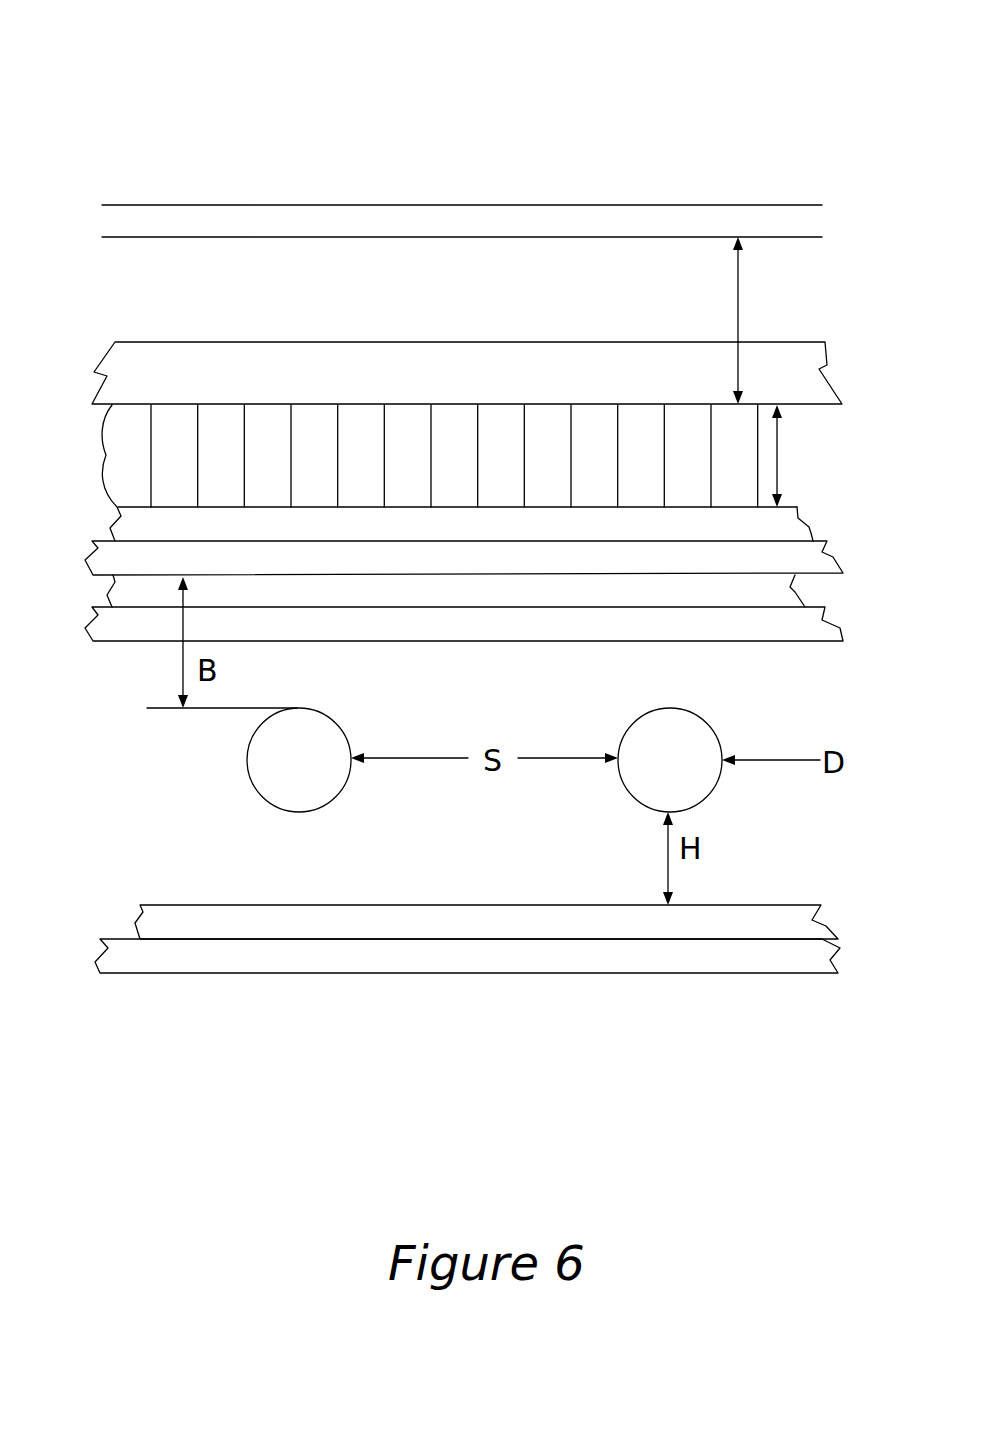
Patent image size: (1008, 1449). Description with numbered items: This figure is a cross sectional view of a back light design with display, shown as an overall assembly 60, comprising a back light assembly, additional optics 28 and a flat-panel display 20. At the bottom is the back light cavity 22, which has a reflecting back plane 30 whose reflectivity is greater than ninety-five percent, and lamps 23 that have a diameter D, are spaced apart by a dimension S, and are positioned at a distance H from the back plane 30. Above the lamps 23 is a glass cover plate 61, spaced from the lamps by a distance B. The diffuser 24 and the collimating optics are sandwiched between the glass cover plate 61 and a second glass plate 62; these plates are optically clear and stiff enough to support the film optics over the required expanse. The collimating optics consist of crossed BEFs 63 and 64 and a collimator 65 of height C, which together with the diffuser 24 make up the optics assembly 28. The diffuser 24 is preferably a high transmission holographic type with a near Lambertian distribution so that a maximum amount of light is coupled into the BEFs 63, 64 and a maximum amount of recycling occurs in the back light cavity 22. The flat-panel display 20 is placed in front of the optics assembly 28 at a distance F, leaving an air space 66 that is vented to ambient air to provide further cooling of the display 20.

The electronic assembly 60 is at (312, 78).
The flat-panel display 20 is at (510, 213).
The air space 66 is at (493, 280).
The glass plate 62 is at (133, 342).
The collimator 65 is at (281, 460).
The optics assembly 28 is at (431, 473).
The BEF 63 is at (382, 557).
The diffuser 24 is at (786, 594).
The BEF 64 is at (500, 520).
The glass cover plate 61 is at (140, 641).
The lamp 23 is at (718, 740).
The reflecting back plane 30 is at (475, 928).
The back light cavity 22 is at (302, 952).